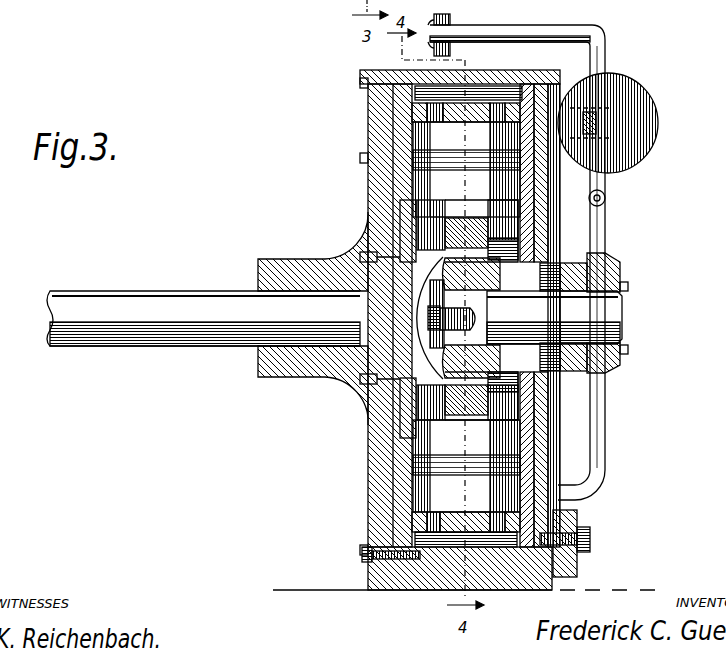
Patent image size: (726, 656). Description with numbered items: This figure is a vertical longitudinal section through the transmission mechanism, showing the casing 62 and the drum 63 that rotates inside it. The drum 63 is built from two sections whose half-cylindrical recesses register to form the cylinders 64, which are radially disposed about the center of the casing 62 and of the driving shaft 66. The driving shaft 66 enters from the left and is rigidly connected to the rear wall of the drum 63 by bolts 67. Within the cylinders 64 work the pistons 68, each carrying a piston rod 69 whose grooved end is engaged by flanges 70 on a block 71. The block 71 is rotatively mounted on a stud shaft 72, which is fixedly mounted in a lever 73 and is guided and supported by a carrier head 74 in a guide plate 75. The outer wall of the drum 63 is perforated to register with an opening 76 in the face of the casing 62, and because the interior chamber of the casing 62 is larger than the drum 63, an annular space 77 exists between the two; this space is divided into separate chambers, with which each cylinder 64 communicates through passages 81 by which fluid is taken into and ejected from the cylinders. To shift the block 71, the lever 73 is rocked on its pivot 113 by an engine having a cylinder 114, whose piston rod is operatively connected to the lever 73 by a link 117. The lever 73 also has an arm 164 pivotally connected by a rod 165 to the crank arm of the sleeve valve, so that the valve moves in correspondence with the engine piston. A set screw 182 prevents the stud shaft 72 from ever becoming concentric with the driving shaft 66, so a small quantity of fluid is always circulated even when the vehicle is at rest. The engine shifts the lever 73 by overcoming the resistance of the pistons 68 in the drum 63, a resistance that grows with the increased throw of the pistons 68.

The casing 62 is at (376, 503).
The drum 63 is at (402, 482).
The cylinders 64 is at (430, 128).
The driving shaft 66 is at (48, 309).
The bolts 67 is at (365, 246).
The pistons 68 is at (467, 310).
The piston rods 69 is at (481, 310).
The flanges 70 is at (507, 267).
The block 71 is at (472, 285).
The stud shaft 72 is at (607, 317).
The lever 73 is at (607, 280).
The carrier head 74 is at (607, 358).
The guide plate 75 is at (572, 371).
The opening 76 is at (558, 265).
The annular space 77 is at (495, 82).
The passages 81 is at (503, 118).
The pivot 113 is at (580, 534).
The cylinder 114 is at (650, 119).
The link 117 is at (610, 128).
The arm 164 is at (546, 36).
The rod 165 is at (455, 44).
The set screw 182 is at (606, 198).